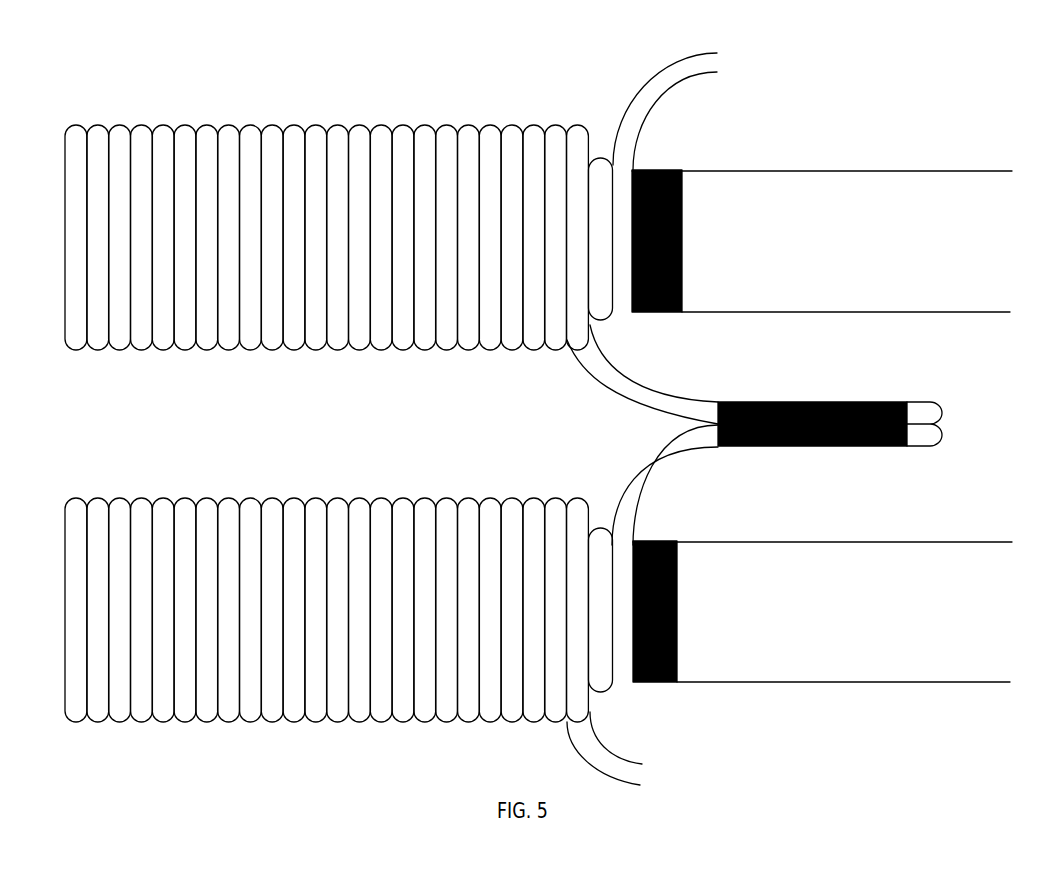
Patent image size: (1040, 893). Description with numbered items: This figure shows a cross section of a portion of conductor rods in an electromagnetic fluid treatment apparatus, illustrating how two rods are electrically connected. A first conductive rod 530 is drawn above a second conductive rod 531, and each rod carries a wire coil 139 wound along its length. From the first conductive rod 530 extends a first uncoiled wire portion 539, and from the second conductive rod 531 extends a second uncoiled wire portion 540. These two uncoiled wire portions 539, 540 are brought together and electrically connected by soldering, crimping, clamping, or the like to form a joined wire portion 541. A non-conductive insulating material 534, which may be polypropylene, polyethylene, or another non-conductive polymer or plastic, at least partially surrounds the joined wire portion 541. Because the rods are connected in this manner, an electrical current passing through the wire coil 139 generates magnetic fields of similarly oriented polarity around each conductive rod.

The wire coil 139 is at (327, 128).
The first conductive rod 530 is at (948, 206).
The second conductive rod 531 is at (910, 653).
The non-conductive insulating material 534 is at (807, 447).
The first uncoiled wire portion 539 is at (630, 395).
The second uncoiled wire portion 540 is at (638, 468).
The joined wire portion 541 is at (943, 420).